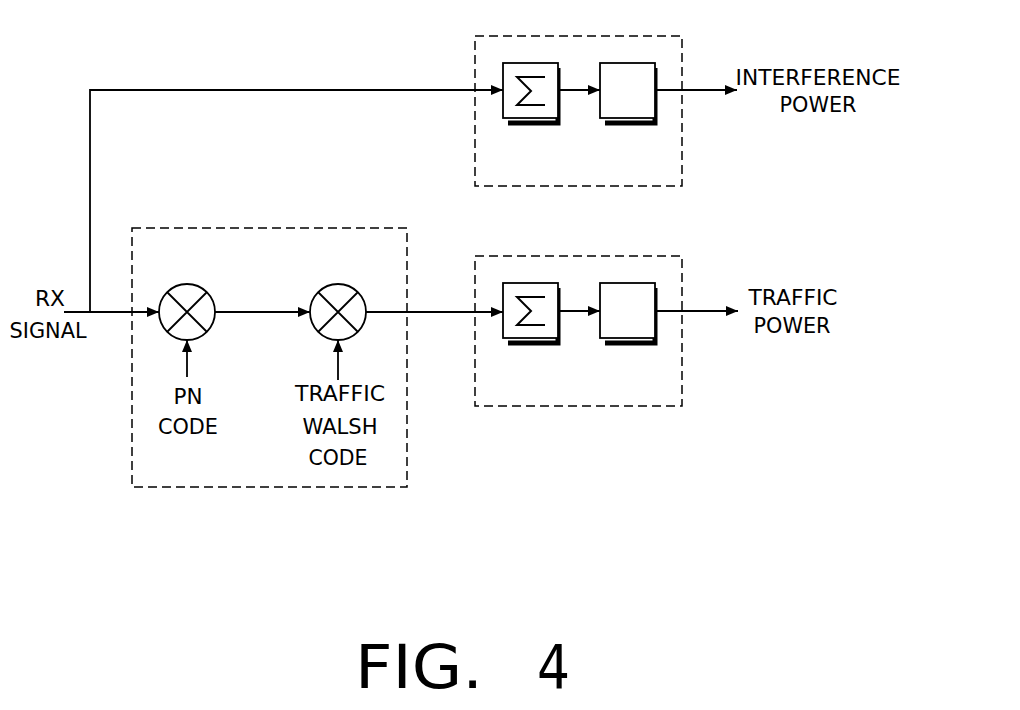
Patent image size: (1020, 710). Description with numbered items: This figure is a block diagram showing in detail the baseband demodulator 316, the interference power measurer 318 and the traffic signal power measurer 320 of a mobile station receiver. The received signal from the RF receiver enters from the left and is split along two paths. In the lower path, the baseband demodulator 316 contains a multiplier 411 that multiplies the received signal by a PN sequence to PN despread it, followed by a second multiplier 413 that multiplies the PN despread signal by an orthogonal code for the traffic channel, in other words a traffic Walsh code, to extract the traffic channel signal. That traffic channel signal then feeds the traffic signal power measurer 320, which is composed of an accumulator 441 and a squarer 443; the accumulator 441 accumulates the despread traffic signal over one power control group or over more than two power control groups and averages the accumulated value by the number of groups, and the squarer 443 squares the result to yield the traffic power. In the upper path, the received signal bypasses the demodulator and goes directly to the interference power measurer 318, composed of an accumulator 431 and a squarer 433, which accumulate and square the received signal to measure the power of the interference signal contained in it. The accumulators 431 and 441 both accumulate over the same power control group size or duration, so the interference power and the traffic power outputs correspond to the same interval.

The baseband demodulator 316 is at (269, 331).
The interference power measurer 318 is at (578, 141).
The traffic signal power measurer 320 is at (578, 359).
The multiplier 411 is at (187, 284).
The multiplier 413 is at (338, 284).
The accumulator 431 is at (531, 118).
The squarer 433 is at (628, 118).
The accumulator 441 is at (531, 338).
The squarer 443 is at (628, 338).